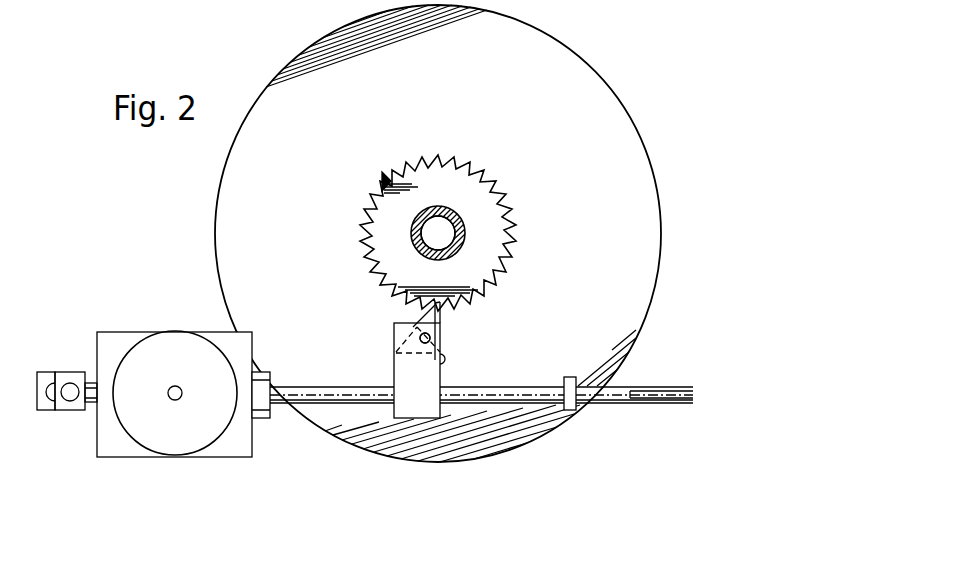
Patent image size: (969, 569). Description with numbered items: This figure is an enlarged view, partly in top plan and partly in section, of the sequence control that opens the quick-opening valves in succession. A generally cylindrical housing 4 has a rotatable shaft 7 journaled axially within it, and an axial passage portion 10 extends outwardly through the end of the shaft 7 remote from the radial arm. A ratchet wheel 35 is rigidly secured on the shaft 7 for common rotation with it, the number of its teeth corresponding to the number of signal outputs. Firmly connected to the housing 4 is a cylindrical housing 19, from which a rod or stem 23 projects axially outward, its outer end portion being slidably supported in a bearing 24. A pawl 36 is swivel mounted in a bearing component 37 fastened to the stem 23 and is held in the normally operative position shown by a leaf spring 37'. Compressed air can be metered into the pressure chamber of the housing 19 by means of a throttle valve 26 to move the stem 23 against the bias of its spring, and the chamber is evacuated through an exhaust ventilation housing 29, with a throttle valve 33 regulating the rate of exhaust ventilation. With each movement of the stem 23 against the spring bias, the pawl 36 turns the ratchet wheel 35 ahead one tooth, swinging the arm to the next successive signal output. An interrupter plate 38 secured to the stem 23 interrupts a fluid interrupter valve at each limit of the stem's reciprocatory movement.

The cylindrical housing 4 is at (583, 95).
The rotatable shaft 7 is at (463, 222).
The axial passage portion 10 is at (426, 238).
The cylindrical housing 19 is at (236, 438).
The rod or stem 23 is at (524, 394).
The bearing 24 is at (570, 412).
The throttle valve 26 is at (45, 410).
The exhaust ventilation housing 29 is at (178, 343).
The throttle valve 33 is at (82, 375).
The ratchet wheel 35 is at (425, 178).
The pawl 36 is at (445, 312).
The bearing component 37 is at (394, 361).
The leaf spring 37' is at (456, 351).
The interrupter plate 38 is at (666, 399).